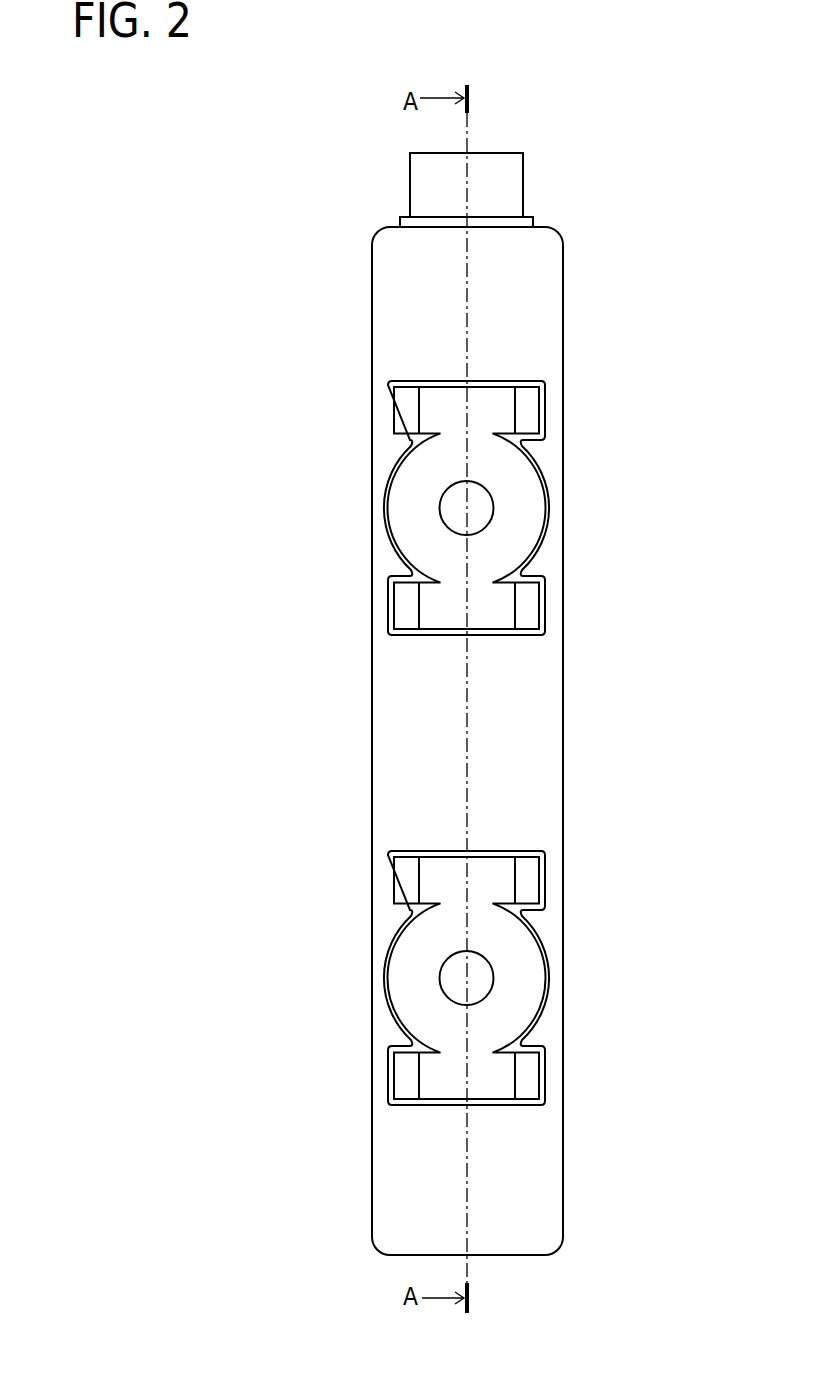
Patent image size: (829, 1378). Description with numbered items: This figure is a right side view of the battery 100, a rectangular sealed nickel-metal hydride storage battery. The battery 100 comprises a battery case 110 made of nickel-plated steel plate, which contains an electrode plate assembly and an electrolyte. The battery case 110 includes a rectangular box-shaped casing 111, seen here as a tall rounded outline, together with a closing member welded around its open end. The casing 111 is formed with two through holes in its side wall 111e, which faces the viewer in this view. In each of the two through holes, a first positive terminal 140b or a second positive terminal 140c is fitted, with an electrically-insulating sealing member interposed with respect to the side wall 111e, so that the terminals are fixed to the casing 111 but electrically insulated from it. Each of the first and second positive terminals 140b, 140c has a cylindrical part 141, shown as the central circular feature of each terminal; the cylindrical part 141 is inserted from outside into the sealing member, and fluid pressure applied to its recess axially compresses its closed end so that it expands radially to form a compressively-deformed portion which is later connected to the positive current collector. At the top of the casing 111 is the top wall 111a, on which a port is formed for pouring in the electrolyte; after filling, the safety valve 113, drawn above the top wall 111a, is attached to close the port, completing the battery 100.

The battery 100 is at (598, 212).
The battery case 110 is at (370, 305).
The casing 111 is at (543, 315).
The top wall 111a is at (388, 227).
The side wall 111e is at (538, 732).
The safety valve 113 is at (507, 183).
The first positive terminal 140b is at (527, 523).
The second positive terminal 140c is at (533, 947).
The cylindrical part 141 is at (493, 510).